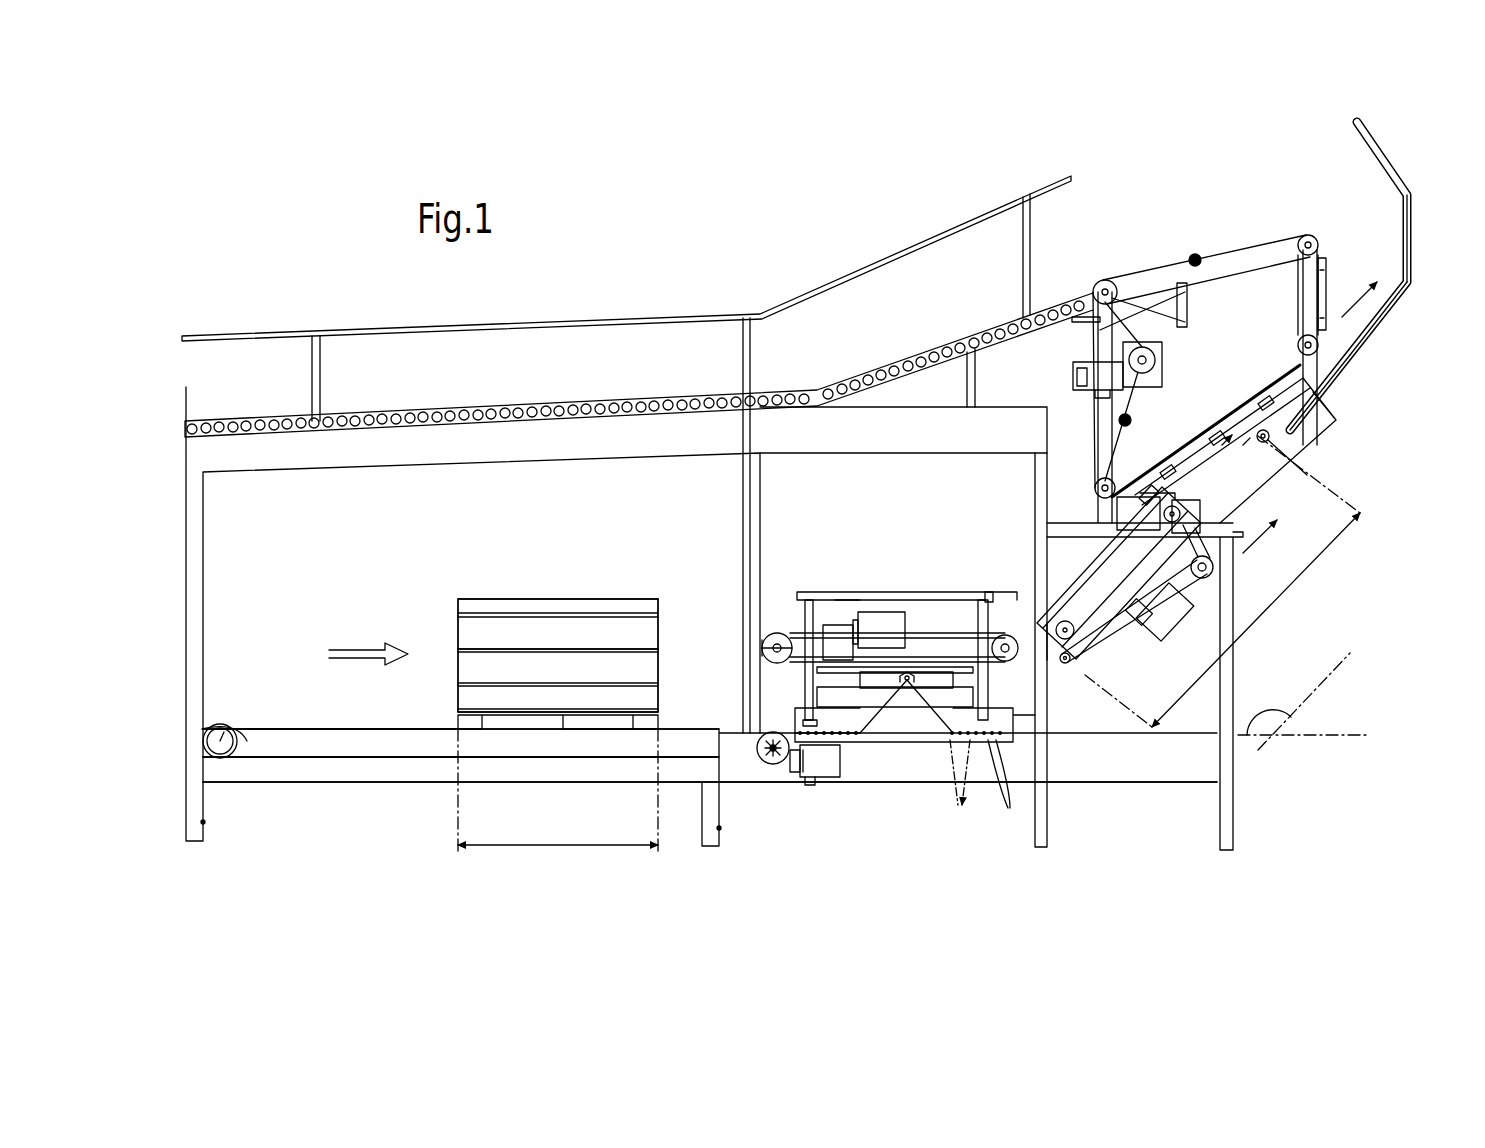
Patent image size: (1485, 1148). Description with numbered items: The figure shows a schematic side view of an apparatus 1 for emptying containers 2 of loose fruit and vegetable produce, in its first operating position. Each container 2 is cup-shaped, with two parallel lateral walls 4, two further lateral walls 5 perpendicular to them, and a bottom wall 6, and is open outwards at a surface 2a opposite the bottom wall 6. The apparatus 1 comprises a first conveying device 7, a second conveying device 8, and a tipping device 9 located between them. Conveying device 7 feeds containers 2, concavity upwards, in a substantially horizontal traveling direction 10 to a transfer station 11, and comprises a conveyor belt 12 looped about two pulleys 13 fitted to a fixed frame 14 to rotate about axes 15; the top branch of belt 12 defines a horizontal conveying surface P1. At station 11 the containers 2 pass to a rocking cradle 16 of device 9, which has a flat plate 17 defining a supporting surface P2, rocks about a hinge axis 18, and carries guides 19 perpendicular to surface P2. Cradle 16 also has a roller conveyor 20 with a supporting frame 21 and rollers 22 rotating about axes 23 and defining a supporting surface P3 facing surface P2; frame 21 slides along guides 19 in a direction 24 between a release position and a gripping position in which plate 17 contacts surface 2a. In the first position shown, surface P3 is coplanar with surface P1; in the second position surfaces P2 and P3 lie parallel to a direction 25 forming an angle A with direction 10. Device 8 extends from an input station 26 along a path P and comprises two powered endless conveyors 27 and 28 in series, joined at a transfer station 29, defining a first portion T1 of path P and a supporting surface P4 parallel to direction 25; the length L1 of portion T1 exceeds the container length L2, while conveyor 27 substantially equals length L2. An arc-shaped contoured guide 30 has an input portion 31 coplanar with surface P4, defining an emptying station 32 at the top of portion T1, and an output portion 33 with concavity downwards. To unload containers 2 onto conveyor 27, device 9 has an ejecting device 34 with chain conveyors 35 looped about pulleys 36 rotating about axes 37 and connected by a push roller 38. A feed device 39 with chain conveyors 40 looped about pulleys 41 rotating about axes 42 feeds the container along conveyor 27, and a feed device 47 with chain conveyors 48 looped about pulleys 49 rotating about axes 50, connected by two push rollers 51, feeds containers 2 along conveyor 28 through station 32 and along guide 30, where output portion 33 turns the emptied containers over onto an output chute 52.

The apparatus 1 is at (1190, 178).
The container 2 is at (527, 588).
The surface 2a is at (485, 595).
The lateral walls 4 is at (452, 635).
The lateral walls 5 is at (560, 645).
The bottom wall 6 is at (563, 718).
The conveying device 7 is at (478, 858).
The conveying device 8 is at (1340, 600).
The tipping device 9 is at (920, 795).
The traveling direction 10 is at (368, 641).
The transfer station 11 is at (807, 790).
The conveyor belt 12 is at (292, 728).
The pulleys 13 is at (232, 754).
The fixed frame 14 is at (308, 783).
The axes of rotation 15 is at (220, 741).
The rocking cradle 16 is at (822, 572).
The flat plate 17 is at (848, 598).
The hinge axis 18 is at (907, 683).
The guides 19 is at (805, 600).
The roller conveyor 20 is at (985, 760).
The supporting frame 21 is at (1005, 718).
The rollers 22 is at (1005, 787).
The axes of rotation 23 is at (958, 788).
The direction 24 is at (995, 606).
The direction 25 is at (1264, 544).
The input station 26 is at (1050, 668).
The endless conveyor 27 is at (1100, 608).
The endless conveyor 28 is at (1258, 478).
The transfer station 29 is at (1185, 495).
The contoured guide 30 is at (1418, 290).
The input portion 31 is at (1362, 325).
The emptying station 32 is at (1286, 428).
The output portion 33 is at (1410, 210).
The ejecting device 34 is at (915, 625).
The chain conveyors 35 is at (945, 655).
The pulleys 36 is at (777, 640).
The axes of rotation 37 is at (777, 660).
The push roller 38 is at (770, 650).
The feed device 39 is at (1080, 630).
The chain conveyors 40 is at (1175, 632).
The pulleys 41 is at (1215, 570).
The axes of rotation 42 is at (1150, 493).
The feed device 47 is at (1165, 267).
The chain conveyors 48 is at (1222, 258).
The pulleys 49 is at (1306, 236).
The axes of rotation 50 is at (1313, 243).
The push rollers 51 is at (1193, 255).
The output chute 52 is at (687, 305).
The angle A is at (1266, 718).
The length L1 is at (1222, 581).
The length L2 is at (558, 803).
The path P is at (1358, 294).
The conveying surface P1 is at (352, 728).
The supporting surface P2 is at (855, 600).
The supporting surface P3 is at (822, 728).
The supporting surface P4 is at (1243, 448).
The first portion T1 is at (1190, 470).